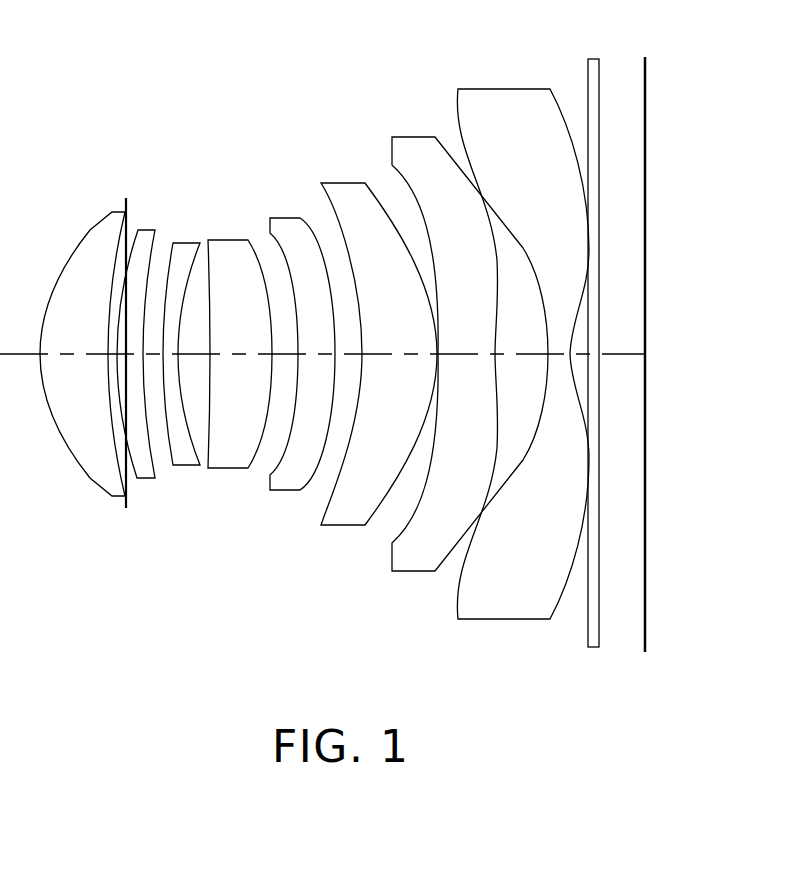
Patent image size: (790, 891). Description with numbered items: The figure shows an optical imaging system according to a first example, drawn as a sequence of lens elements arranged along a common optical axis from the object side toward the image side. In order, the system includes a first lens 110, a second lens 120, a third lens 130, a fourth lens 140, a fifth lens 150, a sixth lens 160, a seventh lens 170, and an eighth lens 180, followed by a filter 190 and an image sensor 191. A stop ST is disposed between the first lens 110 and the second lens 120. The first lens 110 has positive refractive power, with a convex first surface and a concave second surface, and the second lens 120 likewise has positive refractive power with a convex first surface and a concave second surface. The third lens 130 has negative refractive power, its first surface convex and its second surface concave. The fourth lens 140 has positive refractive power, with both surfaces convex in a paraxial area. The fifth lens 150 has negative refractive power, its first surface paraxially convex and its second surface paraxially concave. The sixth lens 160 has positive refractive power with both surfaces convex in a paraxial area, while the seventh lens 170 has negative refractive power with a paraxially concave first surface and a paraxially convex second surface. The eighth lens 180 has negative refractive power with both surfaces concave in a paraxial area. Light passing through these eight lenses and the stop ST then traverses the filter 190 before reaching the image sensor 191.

The first lens 110 is at (93, 247).
The second lens 120 is at (148, 232).
The third lens 130 is at (185, 245).
The fourth lens 140 is at (230, 247).
The fifth lens 150 is at (288, 222).
The sixth lens 160 is at (340, 183).
The seventh lens 170 is at (413, 137).
The eighth lens 180 is at (500, 89).
The filter 190 is at (593, 59).
The image sensor 191 is at (645, 57).
The stop ST is at (125, 198).